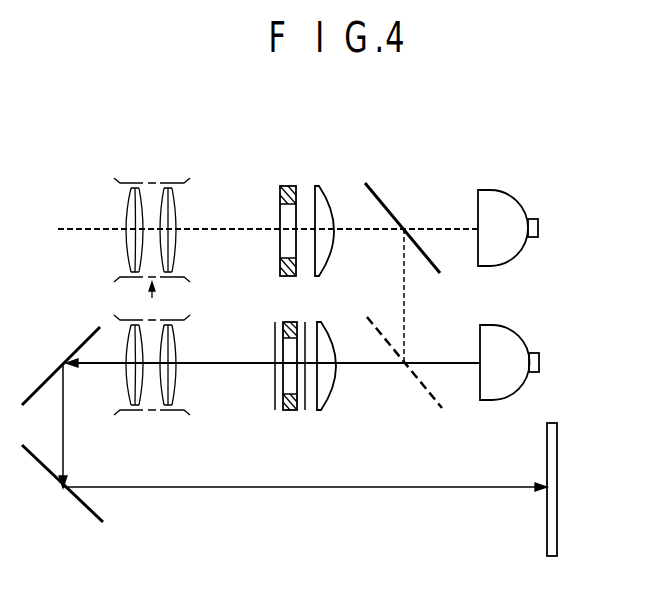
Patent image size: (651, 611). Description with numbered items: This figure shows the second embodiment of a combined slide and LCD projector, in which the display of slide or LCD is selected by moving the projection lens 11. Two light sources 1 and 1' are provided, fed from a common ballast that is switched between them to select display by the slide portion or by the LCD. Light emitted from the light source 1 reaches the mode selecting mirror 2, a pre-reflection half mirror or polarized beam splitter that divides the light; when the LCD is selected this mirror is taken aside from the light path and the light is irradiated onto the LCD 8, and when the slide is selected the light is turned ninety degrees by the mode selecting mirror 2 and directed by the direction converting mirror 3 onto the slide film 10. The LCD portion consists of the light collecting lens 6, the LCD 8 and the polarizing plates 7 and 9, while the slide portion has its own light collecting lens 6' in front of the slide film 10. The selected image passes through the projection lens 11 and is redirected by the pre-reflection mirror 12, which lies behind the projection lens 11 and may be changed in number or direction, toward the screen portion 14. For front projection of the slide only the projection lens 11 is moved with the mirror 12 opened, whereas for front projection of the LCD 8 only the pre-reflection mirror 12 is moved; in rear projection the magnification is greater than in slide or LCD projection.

The light source 1 is at (509, 386).
The light source 1' is at (508, 206).
The mode selecting mirror 2 is at (423, 388).
The direction converting mirror 3 is at (384, 203).
The light collecting lens 6 is at (329, 389).
The light collecting lens 6' is at (323, 212).
The polarizing plate 7 is at (305, 412).
The LCD 8 is at (292, 412).
The polarizing plate 9 is at (275, 408).
The slide film 10 is at (287, 185).
The projection lens 11 is at (155, 410).
The pre-reflection mirror 12 is at (45, 380).
The screen portion 14 is at (556, 465).